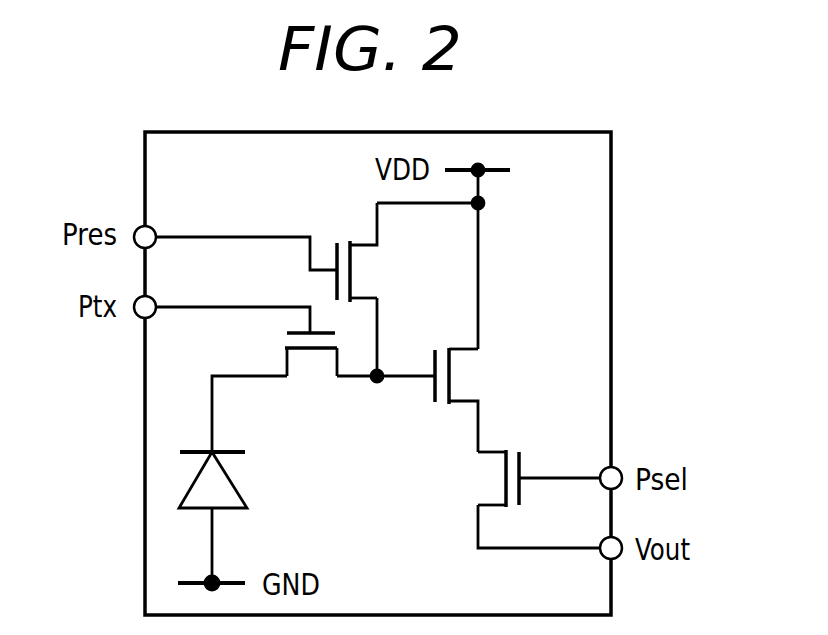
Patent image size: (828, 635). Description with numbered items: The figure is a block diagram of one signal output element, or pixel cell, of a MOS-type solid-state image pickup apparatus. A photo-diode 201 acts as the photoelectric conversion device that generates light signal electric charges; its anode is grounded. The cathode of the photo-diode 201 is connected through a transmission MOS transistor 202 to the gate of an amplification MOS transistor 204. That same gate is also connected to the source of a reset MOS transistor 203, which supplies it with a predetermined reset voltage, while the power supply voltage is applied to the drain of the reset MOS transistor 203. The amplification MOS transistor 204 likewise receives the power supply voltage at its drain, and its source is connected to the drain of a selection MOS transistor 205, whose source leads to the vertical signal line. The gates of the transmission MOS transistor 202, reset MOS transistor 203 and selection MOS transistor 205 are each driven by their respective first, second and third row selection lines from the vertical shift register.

The photo-diode 201 is at (193, 481).
The transmission MOS transistor 202 is at (285, 339).
The reset MOS transistor 203 is at (343, 243).
The amplification MOS transistor 204 is at (470, 375).
The selection MOS transistor 205 is at (490, 477).